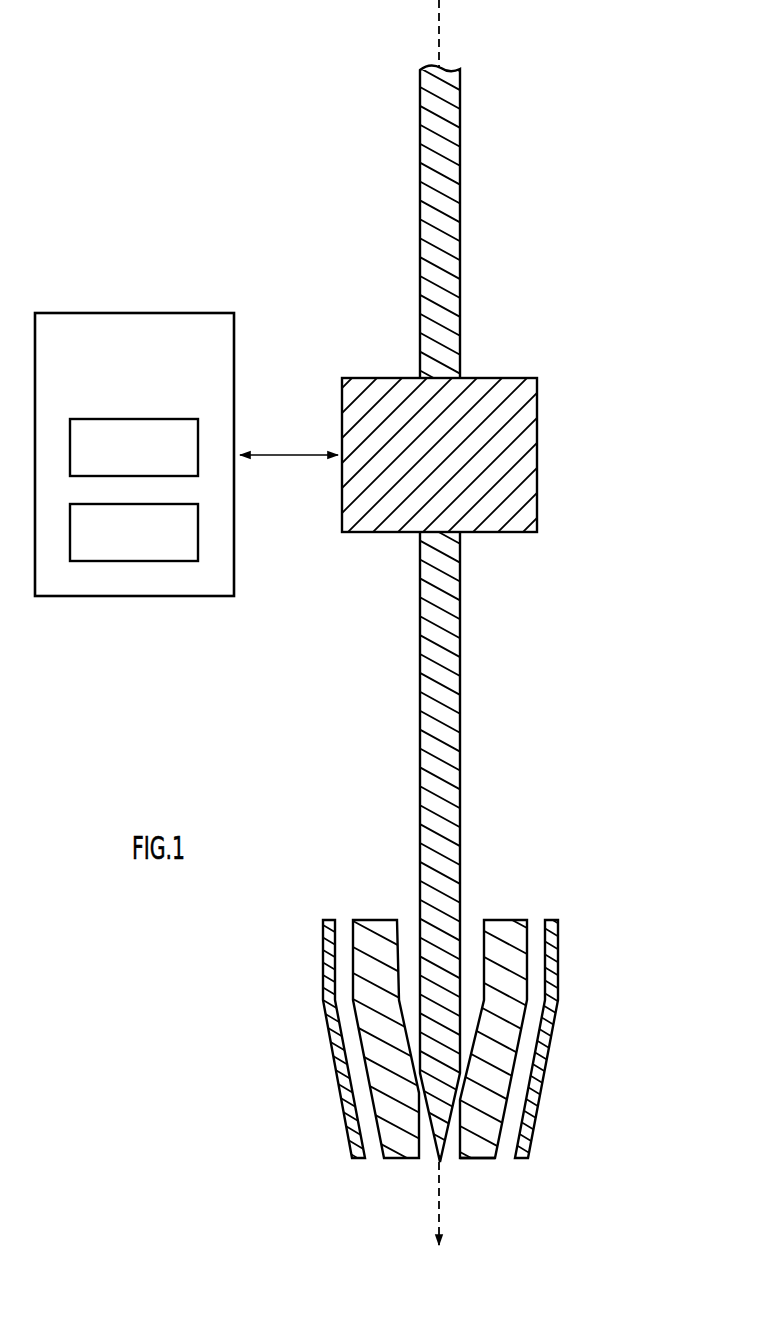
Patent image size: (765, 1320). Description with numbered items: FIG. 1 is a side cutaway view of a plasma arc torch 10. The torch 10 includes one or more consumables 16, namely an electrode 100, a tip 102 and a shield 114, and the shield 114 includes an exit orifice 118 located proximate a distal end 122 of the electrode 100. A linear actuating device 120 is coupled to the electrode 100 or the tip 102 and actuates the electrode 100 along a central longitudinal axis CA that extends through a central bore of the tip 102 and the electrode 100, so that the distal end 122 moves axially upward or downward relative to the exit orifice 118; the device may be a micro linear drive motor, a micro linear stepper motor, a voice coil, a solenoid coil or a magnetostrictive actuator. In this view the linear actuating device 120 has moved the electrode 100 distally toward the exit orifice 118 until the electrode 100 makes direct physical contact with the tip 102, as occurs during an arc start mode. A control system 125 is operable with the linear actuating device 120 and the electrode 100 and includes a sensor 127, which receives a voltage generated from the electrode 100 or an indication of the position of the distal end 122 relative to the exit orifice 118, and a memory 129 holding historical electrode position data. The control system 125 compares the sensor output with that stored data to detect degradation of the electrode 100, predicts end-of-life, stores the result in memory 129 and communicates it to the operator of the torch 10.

The torch 10 is at (249, 212).
The central longitudinal axis CA is at (439, 36).
The electrode 100 is at (450, 648).
The linear actuating device 120 is at (537, 415).
The control system 125 is at (176, 313).
The memory 129 is at (198, 448).
The sensor 127 is at (168, 561).
The consumables 16 is at (491, 1019).
The shield 114 is at (567, 927).
The tip 102 is at (509, 919).
The exit orifice 118 is at (469, 1171).
The distal end 122 is at (435, 1116).